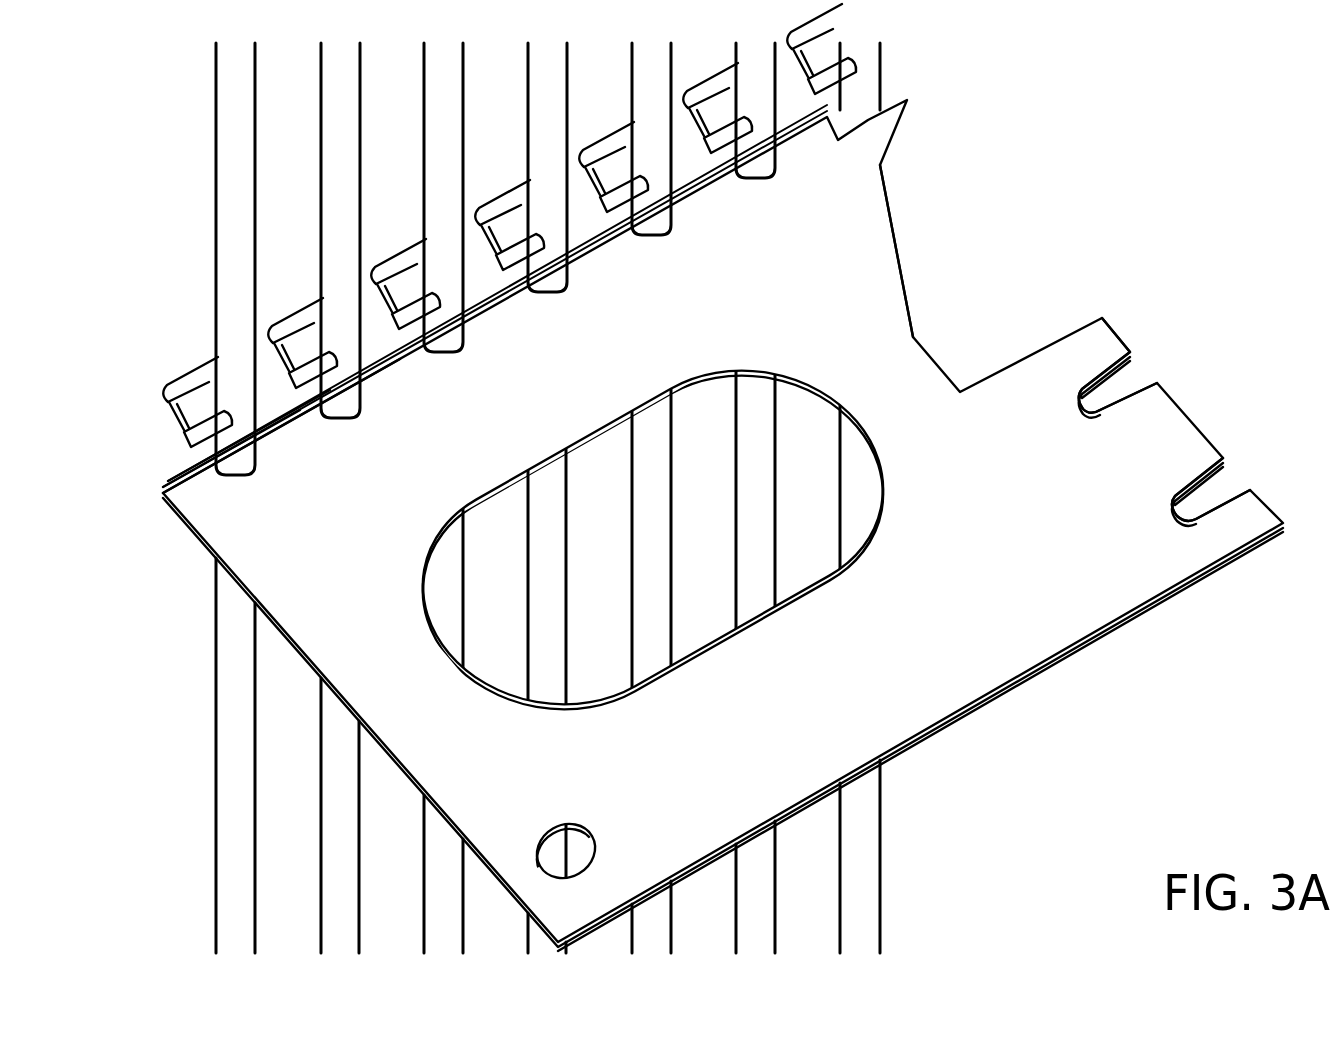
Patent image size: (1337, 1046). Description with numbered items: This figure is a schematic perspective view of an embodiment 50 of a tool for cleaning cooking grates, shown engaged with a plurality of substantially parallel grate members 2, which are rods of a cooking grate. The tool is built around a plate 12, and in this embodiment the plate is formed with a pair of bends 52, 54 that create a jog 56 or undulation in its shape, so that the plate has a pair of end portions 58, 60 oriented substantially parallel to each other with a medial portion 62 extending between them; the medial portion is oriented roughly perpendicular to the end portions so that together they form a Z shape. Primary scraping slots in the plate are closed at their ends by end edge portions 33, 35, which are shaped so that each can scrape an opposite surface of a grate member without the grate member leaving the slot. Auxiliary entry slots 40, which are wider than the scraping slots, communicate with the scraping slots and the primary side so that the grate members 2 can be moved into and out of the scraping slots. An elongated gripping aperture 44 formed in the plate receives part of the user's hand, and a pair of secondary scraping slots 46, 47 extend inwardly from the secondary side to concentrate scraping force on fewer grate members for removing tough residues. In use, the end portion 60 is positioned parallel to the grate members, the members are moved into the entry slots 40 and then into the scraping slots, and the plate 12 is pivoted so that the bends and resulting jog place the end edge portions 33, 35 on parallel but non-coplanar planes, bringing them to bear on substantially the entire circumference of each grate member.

The grate members 2 is at (863, 880).
The plate 12 is at (993, 657).
The end edge portion 33 is at (680, 240).
The end edge portion 35 is at (620, 160).
The auxiliary entry slot 40 is at (473, 243).
The gripping aperture 44 is at (877, 532).
The secondary scraping slot 46 is at (1175, 518).
The secondary scraping slot 47 is at (1083, 410).
The tool embodiment 50 is at (1062, 190).
The bend 52 is at (173, 487).
The bend 54 is at (163, 440).
The jog 56 is at (147, 462).
The end portion 58 is at (305, 327).
The end portion 60 is at (320, 467).
The medial portion 62 is at (375, 325).